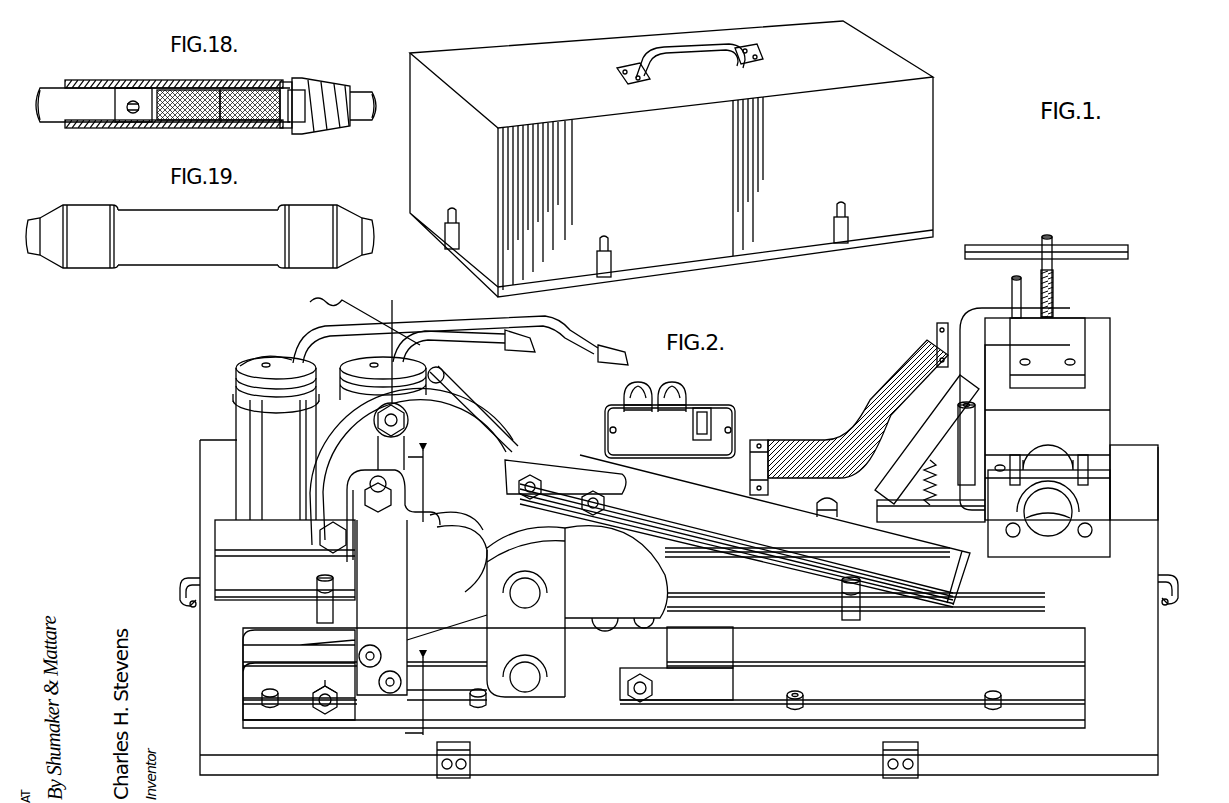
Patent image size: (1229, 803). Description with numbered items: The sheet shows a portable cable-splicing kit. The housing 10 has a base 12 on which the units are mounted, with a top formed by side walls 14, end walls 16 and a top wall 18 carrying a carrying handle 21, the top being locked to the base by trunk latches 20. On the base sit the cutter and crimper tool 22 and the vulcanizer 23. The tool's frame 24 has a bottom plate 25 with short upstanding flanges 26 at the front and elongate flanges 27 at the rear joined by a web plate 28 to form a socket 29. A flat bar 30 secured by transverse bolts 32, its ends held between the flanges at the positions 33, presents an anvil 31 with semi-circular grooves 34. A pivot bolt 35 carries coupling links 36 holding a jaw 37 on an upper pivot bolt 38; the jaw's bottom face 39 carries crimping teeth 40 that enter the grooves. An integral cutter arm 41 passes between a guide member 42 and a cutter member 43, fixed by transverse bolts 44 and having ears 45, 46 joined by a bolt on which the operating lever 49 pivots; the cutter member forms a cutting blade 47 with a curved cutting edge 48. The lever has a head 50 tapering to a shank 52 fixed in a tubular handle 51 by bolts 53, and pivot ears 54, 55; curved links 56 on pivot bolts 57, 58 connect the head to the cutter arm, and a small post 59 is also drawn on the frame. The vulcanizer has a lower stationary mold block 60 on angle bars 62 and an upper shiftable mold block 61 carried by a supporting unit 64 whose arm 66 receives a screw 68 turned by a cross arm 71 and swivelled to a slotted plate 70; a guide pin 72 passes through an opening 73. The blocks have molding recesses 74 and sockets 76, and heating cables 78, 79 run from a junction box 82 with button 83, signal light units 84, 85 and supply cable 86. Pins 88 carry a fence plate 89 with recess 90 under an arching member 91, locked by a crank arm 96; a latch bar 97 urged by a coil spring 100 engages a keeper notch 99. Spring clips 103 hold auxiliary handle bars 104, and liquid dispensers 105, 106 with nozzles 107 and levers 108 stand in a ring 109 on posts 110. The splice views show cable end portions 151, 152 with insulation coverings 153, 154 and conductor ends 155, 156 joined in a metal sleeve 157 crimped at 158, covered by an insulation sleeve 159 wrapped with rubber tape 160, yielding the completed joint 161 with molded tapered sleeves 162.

In FIG. 1, the housing 10 is at (947, 95).
In FIG. 1, the base 12 is at (764, 262).
In FIG. 2, the base 12 is at (1145, 465).
In FIG. 1, the side walls 14 is at (920, 149).
In FIG. 1, the end walls 16 is at (425, 153).
In FIG. 1, the top wall 18 is at (452, 60).
In FIG. 1, the trunk latches 20 is at (611, 265).
In FIG. 1, the carrying handle 21 is at (683, 52).
In FIG. 2, the cutter and crimper tool 22 is at (305, 483).
In FIG. 2, the vulcanizer 23 is at (1116, 340).
In FIG. 2, the frame 24 is at (1070, 688).
In FIG. 2, the bottom plate 25 is at (1068, 712).
In FIG. 2, the short upstanding flanges 26 is at (258, 672).
In FIG. 2, the elongate upstanding flanges 27 is at (710, 655).
In FIG. 2, the web plate 28 is at (1075, 648).
In FIG. 2, the socket 29 is at (1052, 642).
In FIG. 2, the flat bar 30 is at (608, 676).
In FIG. 2, the anvil 31 is at (666, 645).
In FIG. 2, the transverse bolts 32 is at (328, 708).
In FIG. 2, the arm 33 is at (448, 665).
In FIG. 2, the semi-circular grooves 34 is at (638, 624).
In FIG. 2, the pivot bolt 35 is at (540, 678).
In FIG. 2, the coupling links 36 is at (497, 690).
In FIG. 2, the jaw 37 is at (624, 556).
In FIG. 2, the upper pivot bolt 38 is at (540, 594).
In FIG. 2, the bottom face 39 is at (592, 620).
In FIG. 2, the crimping teeth 40 is at (596, 626).
In FIG. 2, the cutter arm 41 is at (480, 520).
In FIG. 2, the guide member 42 is at (400, 612).
In FIG. 2, the cutter member 43 is at (365, 575).
In FIG. 2, the transverse bolts 44 is at (379, 681).
In FIG. 2, the ear 45 is at (378, 458).
In FIG. 2, the ear 46 is at (368, 476).
In FIG. 2, the cutting blade 47 is at (447, 490).
In FIG. 2, the cutting edge 48 is at (440, 545).
In FIG. 2, the cutter operating lever 49 is at (505, 455).
In FIG. 2, the head 50 is at (490, 425).
In FIG. 2, the tubular handle 51 is at (786, 522).
In FIG. 2, the shank 52 is at (548, 460).
In FIG. 2, the transverse bolts 53 is at (610, 495).
In FIG. 2, the pivot ear 54 is at (392, 341).
In FIG. 2, the pivot ear 55 is at (372, 460).
In FIG. 2, the curved links 56 is at (336, 455).
In FIG. 2, the pivot bolt 57 is at (440, 413).
In FIG. 2, the pivot bolt 58 is at (320, 541).
In FIG. 2, the post 59 is at (797, 702).
In FIG. 2, the lower stationary mold block 60 is at (1105, 487).
In FIG. 2, the upper shiftable mold block 61 is at (1100, 395).
In FIG. 2, the angle bars 62 is at (880, 510).
In FIG. 2, the upper mold block supporting unit 64 is at (958, 318).
In FIG. 2, the arm 66 is at (1068, 320).
In FIG. 2, the screw 68 is at (1055, 290).
In FIG. 2, the slotted plate 70 is at (1085, 357).
In FIG. 2, the cross arm 71 is at (1018, 250).
In FIG. 2, the guide pin 72 is at (1052, 285).
In FIG. 2, the opening 73 is at (1008, 310).
In FIG. 2, the molding recesses 74 is at (1045, 512).
In FIG. 2, the sockets 76 is at (1001, 464).
In FIG. 2, the cable 78 is at (850, 440).
In FIG. 2, the cable 79 is at (916, 360).
In FIG. 2, the junction box 82 is at (724, 402).
In FIG. 2, the button 83 is at (732, 420).
In FIG. 2, the signal light unit 84 is at (680, 392).
In FIG. 2, the signal light unit 85 is at (640, 392).
In FIG. 2, the cable 86 is at (318, 302).
In FIG. 2, the pins 88 is at (1096, 506).
In FIG. 2, the fence plate 89 is at (1100, 538).
In FIG. 2, the semi-circular recess 90 is at (1066, 522).
In FIG. 2, the semi-circular member 91 is at (1075, 470).
In FIG. 2, the crank arm 96 is at (975, 432).
In FIG. 2, the latch bar 97 is at (932, 412).
In FIG. 2, the keeper notch 99 is at (950, 394).
In FIG. 2, the coil spring 100 is at (942, 500).
In FIG. 2, the spring clips 103 is at (320, 606).
In FIG. 2, the auxiliary handle bar 104 is at (228, 556).
In FIG. 2, the liquid dispenser 105 is at (252, 432).
In FIG. 2, the liquid dispenser 106 is at (340, 334).
In FIG. 2, the discharge nozzle 107 is at (488, 332).
In FIG. 2, the pivoted lever 108 is at (290, 365).
In FIG. 2, the ring 109 is at (245, 405).
In FIG. 2, the posts 110 is at (272, 458).
In FIG. 18, the cable end portion 151 is at (55, 97).
In FIG. 18, the cable end portion 152 is at (365, 100).
In FIG. 18, the insulation covering 153 is at (68, 115).
In FIG. 18, the insulation covering 154 is at (363, 120).
In FIG. 18, the metal conductor end 155 is at (190, 111).
In FIG. 18, the metal conductor end 156 is at (252, 112).
In FIG. 18, the metal sleeve 157 is at (125, 93).
In FIG. 18, the crimp 158 is at (130, 117).
In FIG. 18, the insulation sleeve 159 is at (266, 92).
In FIG. 18, the rubber tape 160 is at (300, 117).
In FIG. 19, the completed joint 161 is at (205, 250).
In FIG. 19, the molded tapered sleeves 162 is at (92, 258).